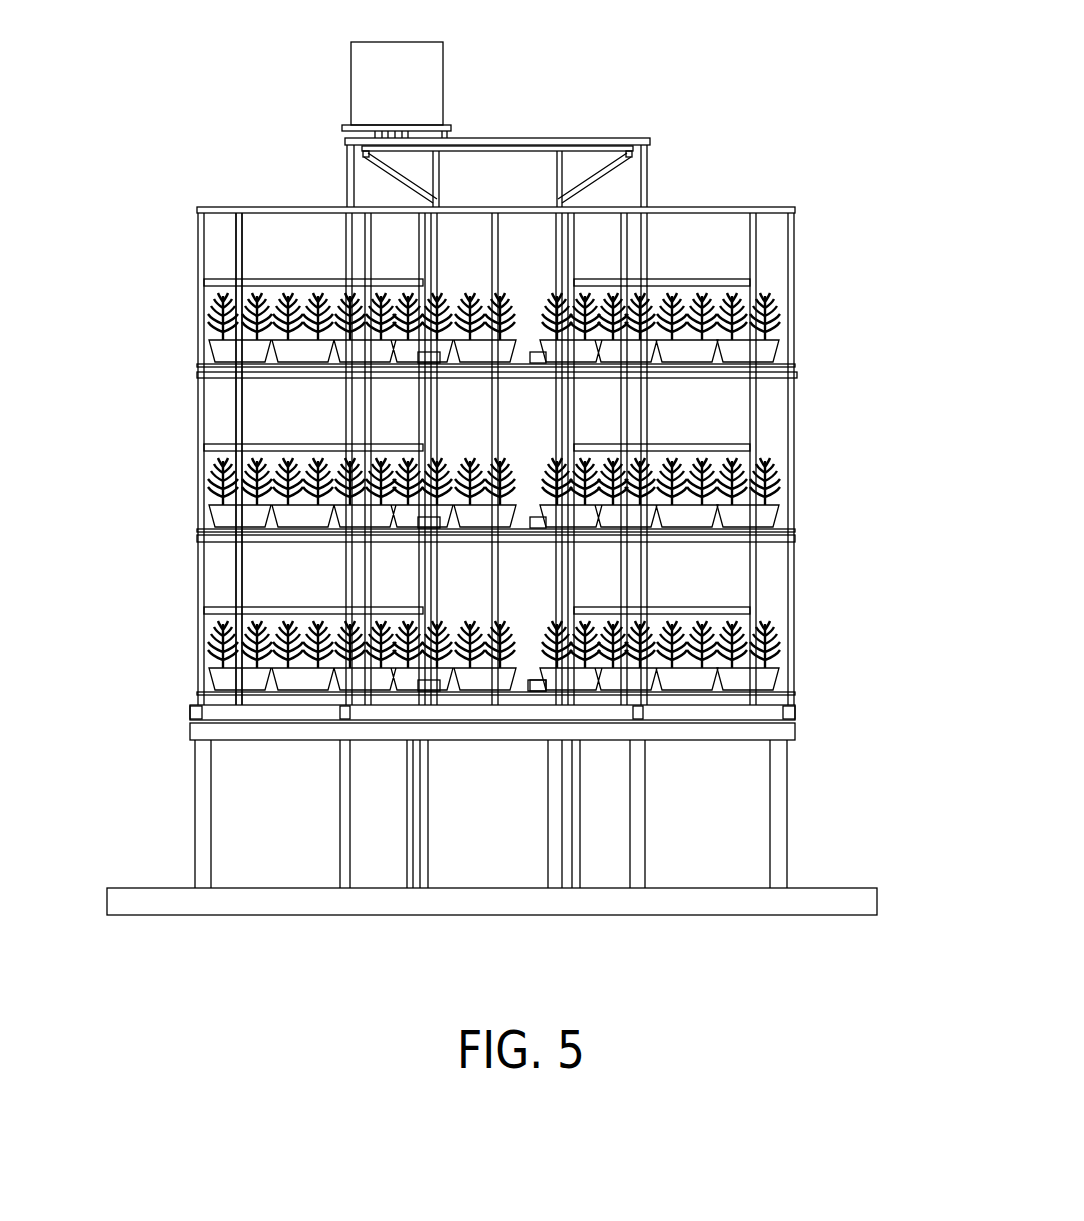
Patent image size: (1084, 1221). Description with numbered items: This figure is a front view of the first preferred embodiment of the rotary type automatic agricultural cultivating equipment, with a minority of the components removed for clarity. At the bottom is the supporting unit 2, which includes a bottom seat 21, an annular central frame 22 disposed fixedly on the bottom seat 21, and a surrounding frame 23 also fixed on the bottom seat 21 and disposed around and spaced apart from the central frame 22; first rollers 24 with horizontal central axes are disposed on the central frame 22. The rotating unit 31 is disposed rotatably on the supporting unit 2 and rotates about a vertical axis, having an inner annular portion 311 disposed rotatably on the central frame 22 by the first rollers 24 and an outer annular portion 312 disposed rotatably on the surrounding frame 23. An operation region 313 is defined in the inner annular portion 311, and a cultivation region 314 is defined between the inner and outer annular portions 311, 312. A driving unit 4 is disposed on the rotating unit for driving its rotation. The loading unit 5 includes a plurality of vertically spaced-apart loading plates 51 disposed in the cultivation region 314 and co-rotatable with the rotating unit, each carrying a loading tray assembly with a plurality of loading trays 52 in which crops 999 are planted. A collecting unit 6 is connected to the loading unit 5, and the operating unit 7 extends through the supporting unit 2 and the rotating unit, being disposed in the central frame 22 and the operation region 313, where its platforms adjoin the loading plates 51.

The supporting unit 2 is at (805, 835).
The bottom seat 21 is at (680, 905).
The annular central frame 22 is at (407, 857).
The surrounding frame 23 is at (195, 815).
The first rollers 24 is at (795, 718).
The rotating unit frame portion 31 is at (198, 206).
The inner annular portion 311 is at (362, 235).
The outer annular portion 312 is at (197, 243).
The operation region 313 is at (533, 580).
The cultivation region 314 is at (255, 564).
The driving unit 4 is at (338, 65).
The loading unit 5 is at (190, 698).
The loading plates 51 is at (797, 372).
The loading trays 52 is at (770, 350).
The collecting unit 6 is at (538, 692).
The operating unit 7 is at (488, 876).
The crops 999 is at (207, 312).